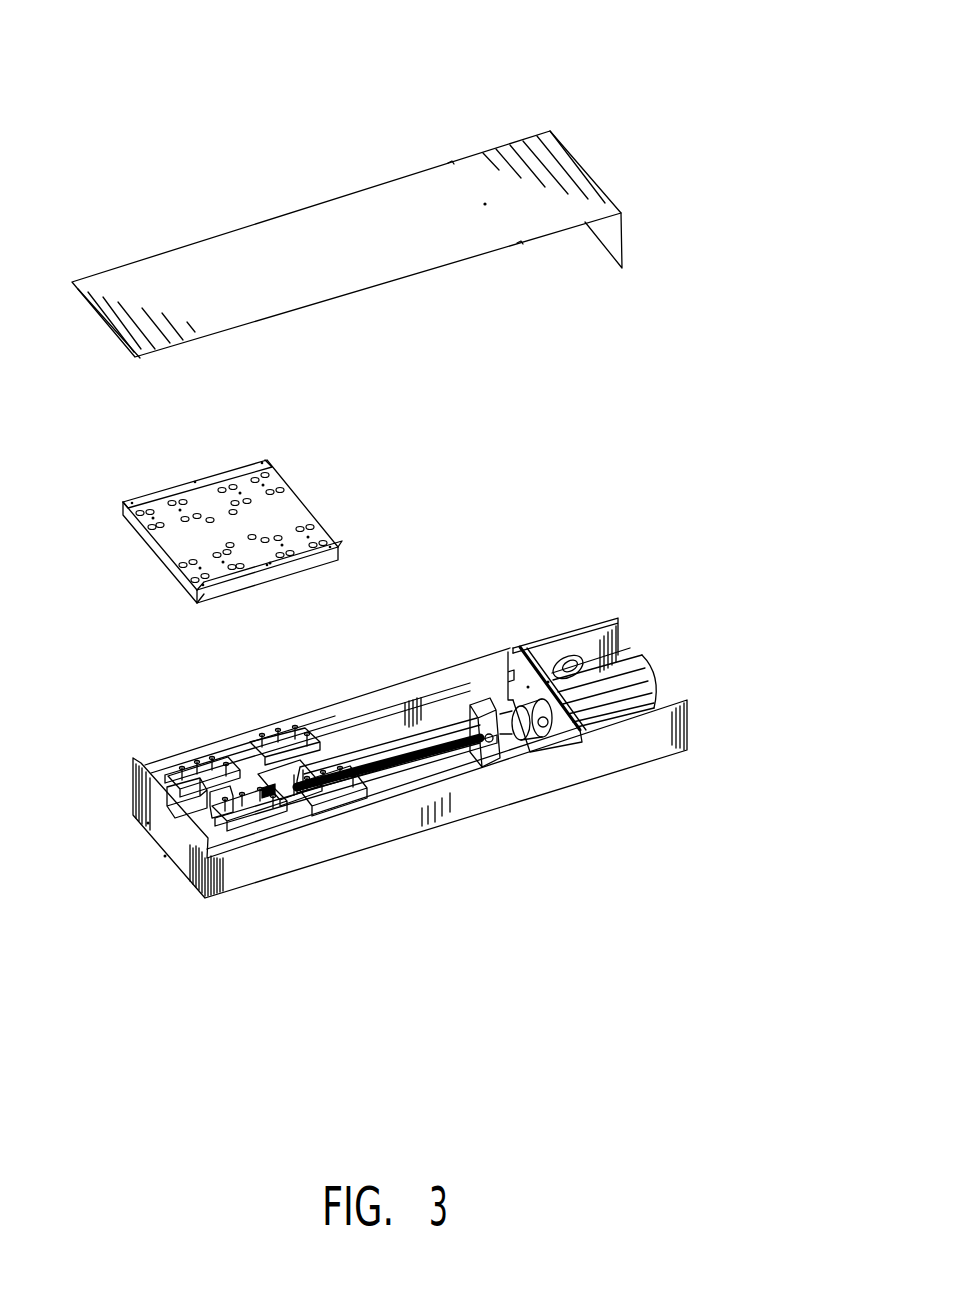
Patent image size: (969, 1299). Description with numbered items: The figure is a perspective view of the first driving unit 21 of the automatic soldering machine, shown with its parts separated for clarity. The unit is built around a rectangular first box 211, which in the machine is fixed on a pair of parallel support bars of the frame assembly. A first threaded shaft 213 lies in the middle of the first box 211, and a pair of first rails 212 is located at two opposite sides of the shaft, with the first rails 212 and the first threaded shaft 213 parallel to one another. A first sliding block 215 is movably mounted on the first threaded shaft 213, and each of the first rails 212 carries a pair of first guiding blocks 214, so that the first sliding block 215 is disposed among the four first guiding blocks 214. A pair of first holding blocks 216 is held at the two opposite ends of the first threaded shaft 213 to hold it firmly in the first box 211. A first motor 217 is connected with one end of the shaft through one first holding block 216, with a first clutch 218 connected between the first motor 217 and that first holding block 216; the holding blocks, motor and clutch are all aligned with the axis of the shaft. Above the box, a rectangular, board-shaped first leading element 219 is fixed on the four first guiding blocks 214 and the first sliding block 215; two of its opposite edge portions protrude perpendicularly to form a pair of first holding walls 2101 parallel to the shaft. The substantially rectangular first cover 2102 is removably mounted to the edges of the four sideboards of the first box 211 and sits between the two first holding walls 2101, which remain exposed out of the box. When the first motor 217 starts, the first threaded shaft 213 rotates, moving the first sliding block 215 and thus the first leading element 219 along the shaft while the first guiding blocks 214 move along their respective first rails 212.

The first driving unit 21 is at (74, 40).
The first cover 2102 is at (455, 242).
The first holding walls 2101 is at (183, 490).
The first leading element 219 is at (248, 537).
The first box 211 is at (650, 742).
The first rails 212 is at (463, 710).
The first threaded shaft 213 is at (397, 740).
The first guiding blocks 214 is at (270, 745).
The first sliding block 215 is at (302, 827).
The first holding blocks 216 is at (152, 794).
The first motor 217 is at (640, 666).
The first clutch 218 is at (560, 745).